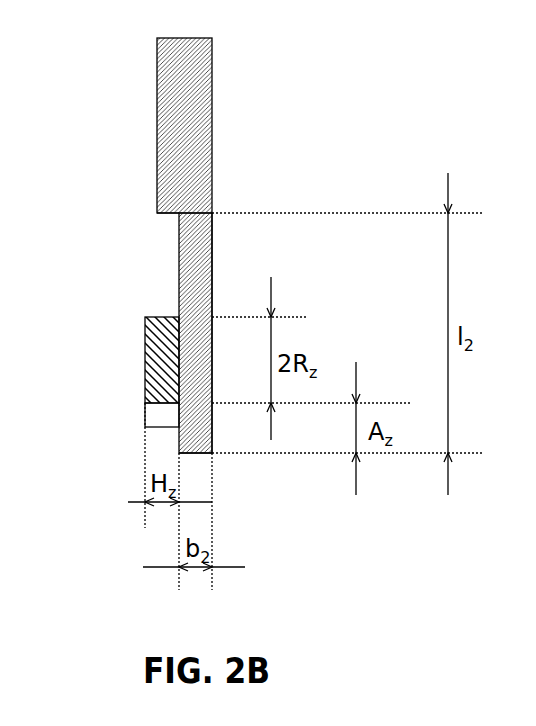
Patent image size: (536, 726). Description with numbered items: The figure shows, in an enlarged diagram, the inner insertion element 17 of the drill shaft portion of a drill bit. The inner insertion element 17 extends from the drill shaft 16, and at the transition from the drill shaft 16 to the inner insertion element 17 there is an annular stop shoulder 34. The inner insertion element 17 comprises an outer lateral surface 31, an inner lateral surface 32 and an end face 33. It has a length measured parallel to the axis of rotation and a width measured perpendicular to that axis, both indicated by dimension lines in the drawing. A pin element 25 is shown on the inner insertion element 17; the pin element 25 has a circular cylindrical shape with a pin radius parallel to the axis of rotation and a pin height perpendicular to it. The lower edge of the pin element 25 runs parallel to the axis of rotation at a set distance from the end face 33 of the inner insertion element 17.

The drill shaft 16 is at (173, 88).
The inner insertion element 17 is at (192, 276).
The pin element 25 is at (152, 362).
The outer lateral surface 31 is at (177, 425).
The inner lateral surface 32 is at (214, 244).
The end face 33 is at (186, 456).
The annular stop shoulder 34 is at (169, 226).